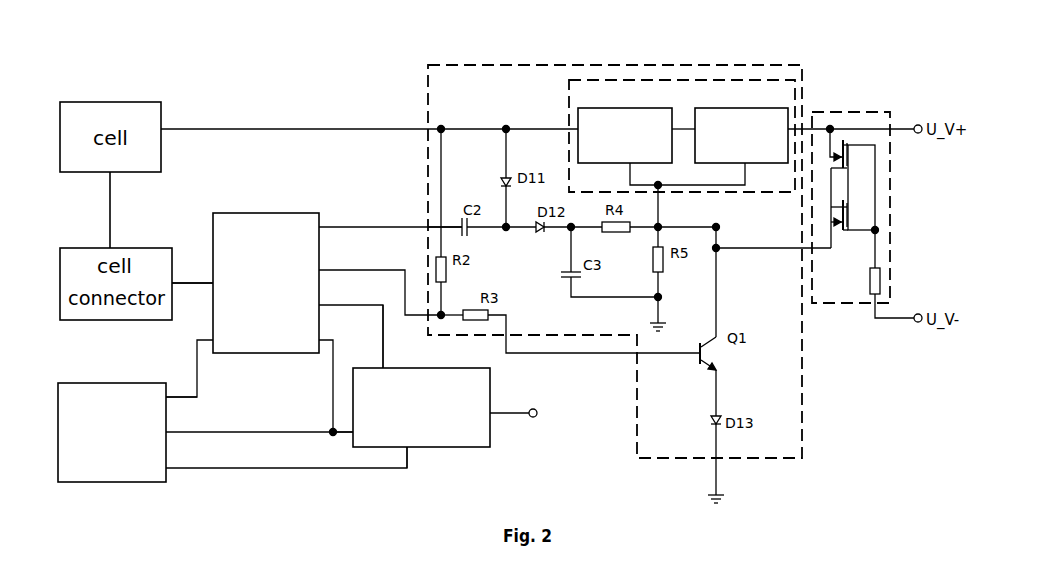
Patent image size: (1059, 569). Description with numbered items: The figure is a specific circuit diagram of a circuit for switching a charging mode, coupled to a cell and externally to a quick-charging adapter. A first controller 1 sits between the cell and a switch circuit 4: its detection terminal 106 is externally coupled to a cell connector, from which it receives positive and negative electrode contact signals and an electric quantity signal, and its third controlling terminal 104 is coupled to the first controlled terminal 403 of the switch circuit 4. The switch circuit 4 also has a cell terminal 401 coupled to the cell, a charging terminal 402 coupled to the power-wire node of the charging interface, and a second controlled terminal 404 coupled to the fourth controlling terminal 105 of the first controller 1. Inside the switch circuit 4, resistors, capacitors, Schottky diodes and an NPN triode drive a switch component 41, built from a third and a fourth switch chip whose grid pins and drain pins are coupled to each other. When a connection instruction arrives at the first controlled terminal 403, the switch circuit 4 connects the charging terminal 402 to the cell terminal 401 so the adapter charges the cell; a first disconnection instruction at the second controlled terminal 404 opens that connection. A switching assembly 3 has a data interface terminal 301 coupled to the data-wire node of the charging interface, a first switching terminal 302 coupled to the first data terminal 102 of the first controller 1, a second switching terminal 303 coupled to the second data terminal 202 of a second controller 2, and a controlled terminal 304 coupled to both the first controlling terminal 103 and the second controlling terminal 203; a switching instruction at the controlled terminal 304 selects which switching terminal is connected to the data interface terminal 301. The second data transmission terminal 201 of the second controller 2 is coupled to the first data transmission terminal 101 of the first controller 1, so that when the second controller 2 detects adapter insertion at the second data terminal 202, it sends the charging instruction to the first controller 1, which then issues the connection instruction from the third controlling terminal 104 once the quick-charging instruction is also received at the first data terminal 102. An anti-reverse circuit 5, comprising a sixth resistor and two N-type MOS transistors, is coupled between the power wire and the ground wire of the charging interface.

The first controller 1 is at (278, 272).
The second controller 2 is at (130, 444).
The switching assembly 3 is at (450, 422).
The switch circuit 4 is at (615, 249).
The switch component 41 is at (718, 128).
The anti-reverse circuit 5 is at (882, 215).
The first data transmission terminal 101 is at (202, 366).
The first data terminal 102 is at (339, 334).
The first controlling terminal 103 is at (314, 383).
The third controlling terminal 104 is at (378, 229).
The fourth controlling terminal 105 is at (368, 289).
The detection terminal 106 is at (205, 283).
The second data transmission terminal 201 is at (170, 398).
The second data terminal 202 is at (274, 461).
The second controlling terminal 203 is at (247, 433).
The data interface terminal 301 is at (521, 415).
The first switching terminal 302 is at (389, 344).
The second switching terminal 303 is at (408, 451).
The controlled terminal 304 is at (356, 434).
The cell terminal 401 is at (429, 123).
The charging terminal 402 is at (812, 136).
The first controlled terminal 403 is at (438, 220).
The second controlled terminal 404 is at (429, 323).